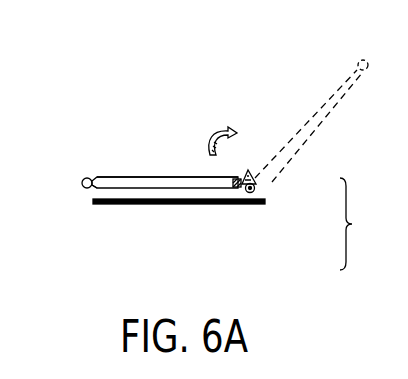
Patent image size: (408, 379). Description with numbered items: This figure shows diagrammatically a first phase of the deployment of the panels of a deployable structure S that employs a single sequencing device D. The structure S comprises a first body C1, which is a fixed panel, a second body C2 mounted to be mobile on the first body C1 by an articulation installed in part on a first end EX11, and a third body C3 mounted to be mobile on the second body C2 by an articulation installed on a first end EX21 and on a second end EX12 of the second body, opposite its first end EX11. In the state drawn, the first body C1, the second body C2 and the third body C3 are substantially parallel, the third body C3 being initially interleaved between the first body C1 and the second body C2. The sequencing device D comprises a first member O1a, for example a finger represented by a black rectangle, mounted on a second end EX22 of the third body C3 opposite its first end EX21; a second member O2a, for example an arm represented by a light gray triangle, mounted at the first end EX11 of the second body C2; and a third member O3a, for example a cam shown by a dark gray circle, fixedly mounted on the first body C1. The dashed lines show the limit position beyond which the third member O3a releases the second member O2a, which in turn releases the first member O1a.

The second end of the second body EX12 is at (91, 172).
The first end of the third body EX21 is at (91, 196).
The first end of the second body EX11 is at (240, 156).
The second end of the third body EX22 is at (231, 198).
The first body C1 is at (155, 205).
The second body C2 is at (174, 177).
The third body C3 is at (134, 188).
The structure S is at (193, 129).
The first member O1a is at (255, 196).
The second member O2a is at (256, 185).
The third member O3a is at (258, 191).
The sequencing device D is at (355, 224).